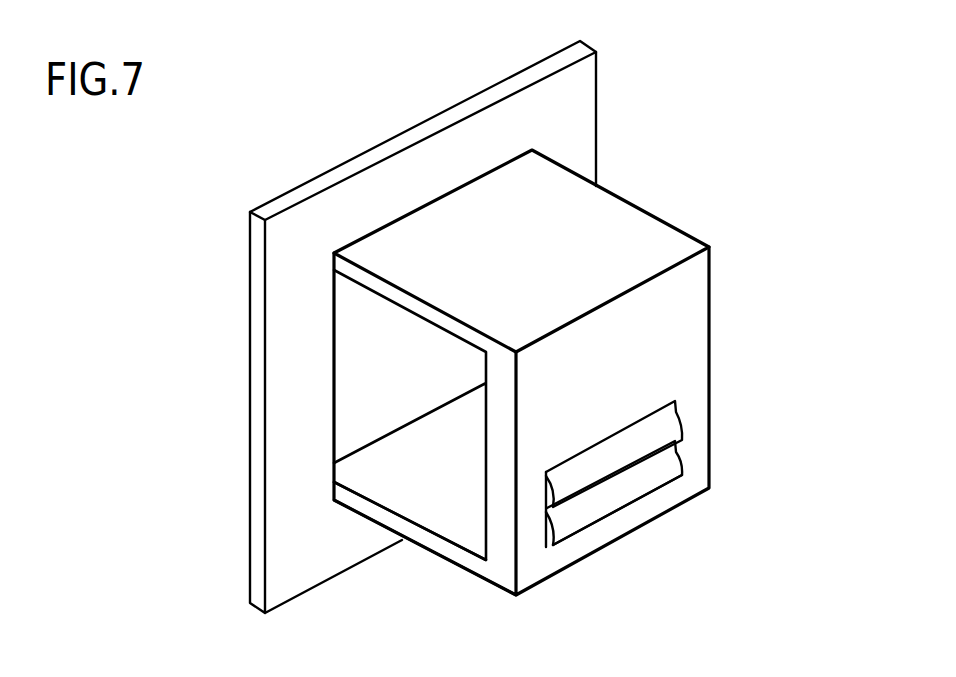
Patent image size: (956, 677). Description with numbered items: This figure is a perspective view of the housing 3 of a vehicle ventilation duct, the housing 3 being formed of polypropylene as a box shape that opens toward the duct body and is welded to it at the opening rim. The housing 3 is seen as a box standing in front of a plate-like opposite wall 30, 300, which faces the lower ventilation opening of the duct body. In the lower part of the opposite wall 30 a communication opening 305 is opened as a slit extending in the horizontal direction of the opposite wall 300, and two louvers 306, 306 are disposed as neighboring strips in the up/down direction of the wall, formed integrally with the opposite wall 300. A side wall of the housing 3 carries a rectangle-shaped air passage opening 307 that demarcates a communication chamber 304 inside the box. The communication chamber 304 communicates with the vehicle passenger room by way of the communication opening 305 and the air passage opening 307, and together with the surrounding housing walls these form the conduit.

The housing 3 is at (613, 74).
The opposite wall 30 is at (572, 148).
The opposite wall 300 is at (697, 290).
The communication chamber 304 is at (397, 392).
The communication opening 305 is at (587, 497).
The louver 306 is at (653, 429).
The air passage opening 307 is at (450, 522).